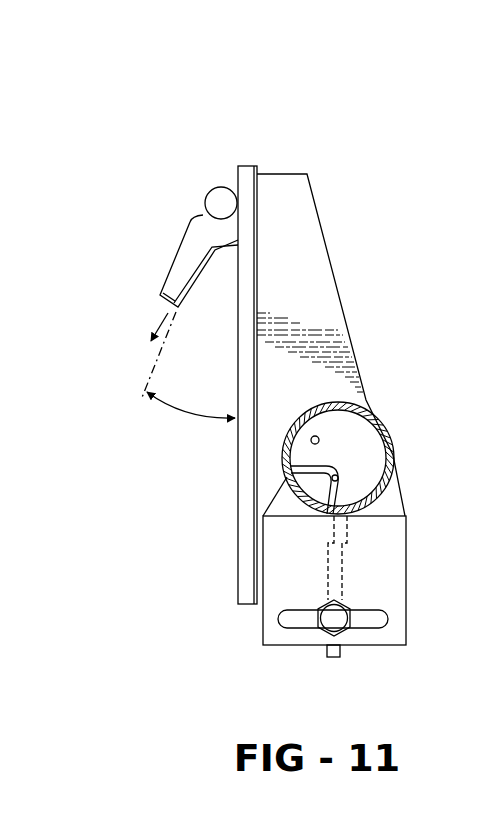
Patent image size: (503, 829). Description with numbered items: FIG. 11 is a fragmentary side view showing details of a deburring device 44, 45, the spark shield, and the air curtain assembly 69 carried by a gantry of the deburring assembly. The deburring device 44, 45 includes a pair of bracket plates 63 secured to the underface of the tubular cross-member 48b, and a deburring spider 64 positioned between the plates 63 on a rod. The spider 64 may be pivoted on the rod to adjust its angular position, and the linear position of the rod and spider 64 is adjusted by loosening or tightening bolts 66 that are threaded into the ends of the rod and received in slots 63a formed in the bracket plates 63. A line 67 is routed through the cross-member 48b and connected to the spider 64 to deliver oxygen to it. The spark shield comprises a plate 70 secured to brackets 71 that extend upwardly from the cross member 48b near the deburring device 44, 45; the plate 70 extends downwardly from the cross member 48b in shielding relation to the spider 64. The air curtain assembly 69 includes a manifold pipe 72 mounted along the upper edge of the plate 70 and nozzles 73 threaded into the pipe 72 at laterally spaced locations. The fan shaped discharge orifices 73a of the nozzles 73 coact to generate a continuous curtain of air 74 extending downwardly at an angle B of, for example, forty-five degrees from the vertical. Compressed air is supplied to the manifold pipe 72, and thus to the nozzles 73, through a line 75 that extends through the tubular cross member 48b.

The air curtain assembly 69 is at (151, 285).
The manifold pipe 72 is at (222, 193).
The nozzle 73 is at (147, 250).
The fan shaped discharge orifice 73a is at (157, 305).
The curtain of air 74 is at (118, 342).
The angle β B is at (178, 412).
The bracket 71 is at (318, 268).
The line 75 is at (311, 437).
The cross-member 48b is at (373, 423).
The deburring device 44 is at (334, 427).
The deburring device 45 is at (334, 427).
The line 67 is at (298, 468).
The plate 70 is at (236, 573).
The deburring spider 64 is at (342, 582).
The slot 63a is at (278, 626).
The bolt 66 is at (320, 612).
The bracket plate 63 is at (318, 618).